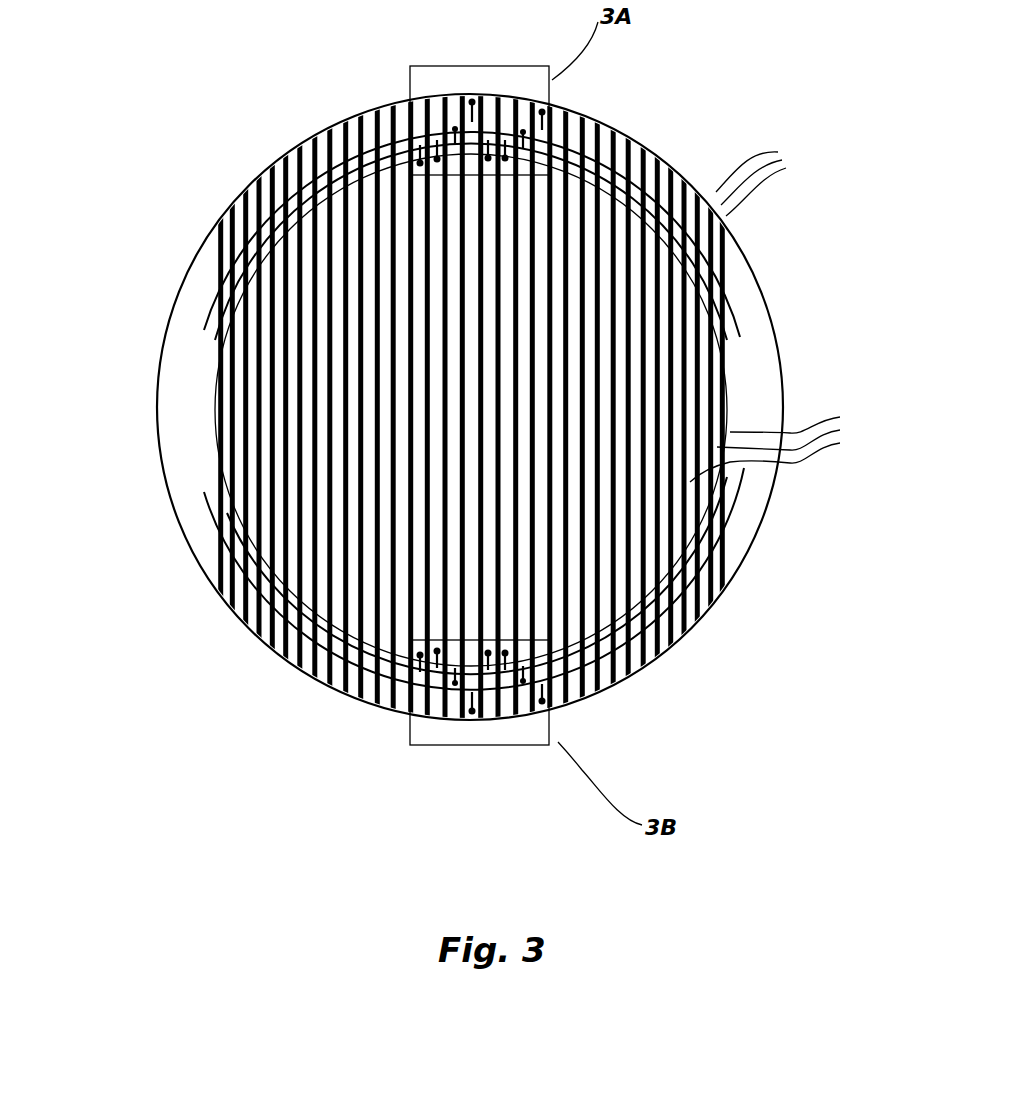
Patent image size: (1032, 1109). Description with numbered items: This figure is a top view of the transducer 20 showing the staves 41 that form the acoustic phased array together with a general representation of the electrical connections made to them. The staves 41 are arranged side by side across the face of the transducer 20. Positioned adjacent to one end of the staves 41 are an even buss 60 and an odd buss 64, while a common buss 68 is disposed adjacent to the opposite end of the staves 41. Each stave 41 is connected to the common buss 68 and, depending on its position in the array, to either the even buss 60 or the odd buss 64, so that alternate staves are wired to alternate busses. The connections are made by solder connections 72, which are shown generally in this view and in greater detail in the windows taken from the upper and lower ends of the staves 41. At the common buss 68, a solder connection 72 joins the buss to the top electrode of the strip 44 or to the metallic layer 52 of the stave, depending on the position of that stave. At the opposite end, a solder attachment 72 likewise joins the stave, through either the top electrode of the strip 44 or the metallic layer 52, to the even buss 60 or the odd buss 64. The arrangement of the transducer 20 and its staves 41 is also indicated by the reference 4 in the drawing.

The grill 4 is at (660, 688).
The transducer 20 is at (250, 130).
The staves 41 is at (649, 128).
The strip 44 is at (783, 438).
The metallic layer 52 is at (766, 175).
The even buss 60 is at (745, 328).
The odd buss 64 is at (733, 286).
The common buss 68 is at (217, 522).
The solder connection 72 is at (437, 118).